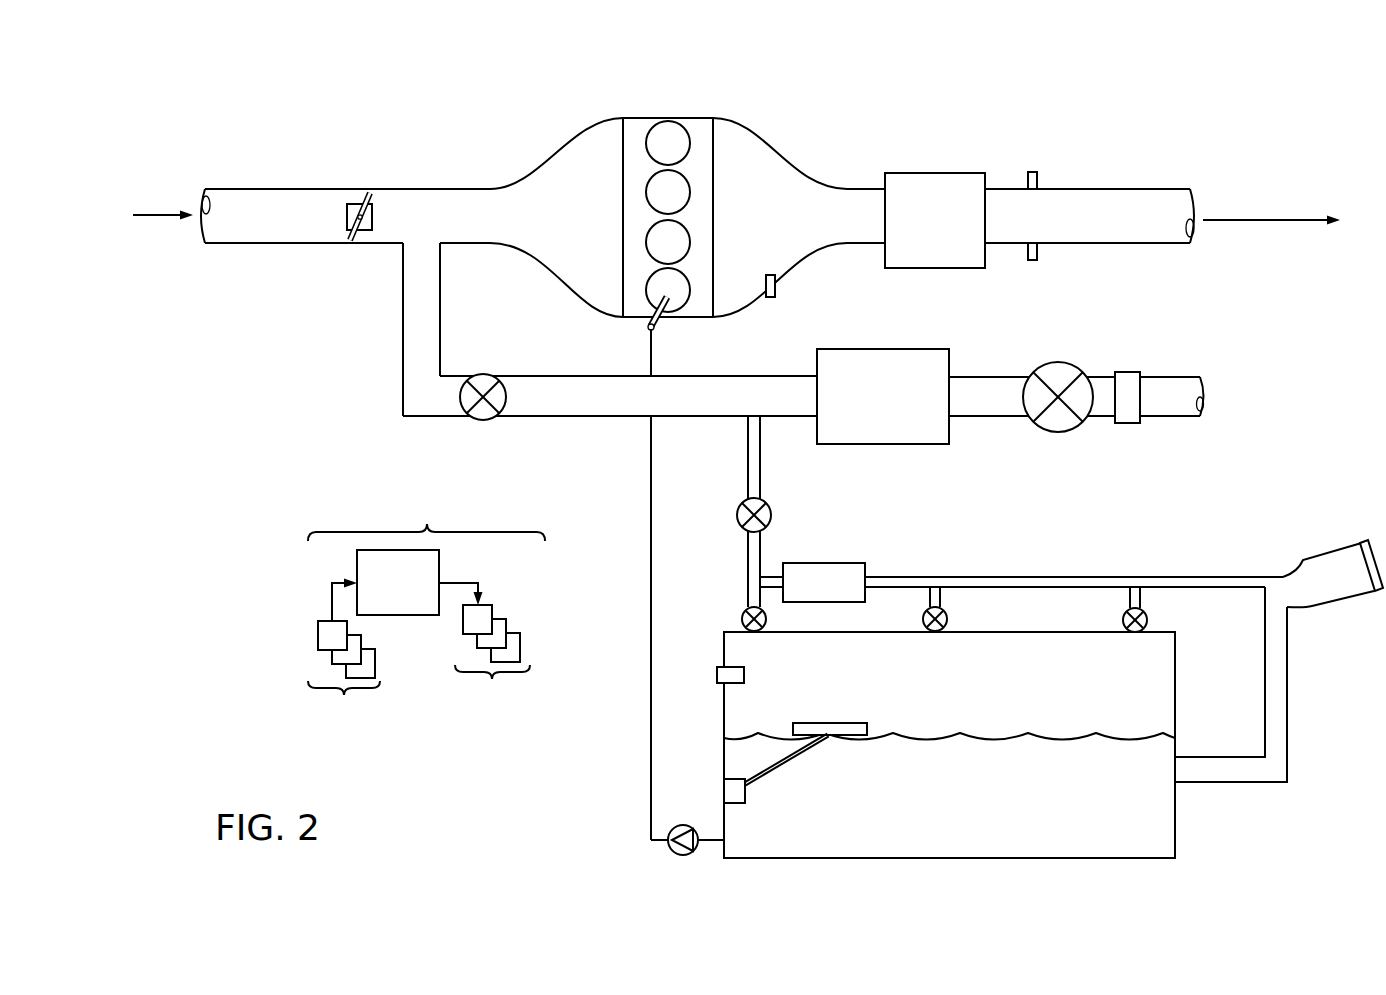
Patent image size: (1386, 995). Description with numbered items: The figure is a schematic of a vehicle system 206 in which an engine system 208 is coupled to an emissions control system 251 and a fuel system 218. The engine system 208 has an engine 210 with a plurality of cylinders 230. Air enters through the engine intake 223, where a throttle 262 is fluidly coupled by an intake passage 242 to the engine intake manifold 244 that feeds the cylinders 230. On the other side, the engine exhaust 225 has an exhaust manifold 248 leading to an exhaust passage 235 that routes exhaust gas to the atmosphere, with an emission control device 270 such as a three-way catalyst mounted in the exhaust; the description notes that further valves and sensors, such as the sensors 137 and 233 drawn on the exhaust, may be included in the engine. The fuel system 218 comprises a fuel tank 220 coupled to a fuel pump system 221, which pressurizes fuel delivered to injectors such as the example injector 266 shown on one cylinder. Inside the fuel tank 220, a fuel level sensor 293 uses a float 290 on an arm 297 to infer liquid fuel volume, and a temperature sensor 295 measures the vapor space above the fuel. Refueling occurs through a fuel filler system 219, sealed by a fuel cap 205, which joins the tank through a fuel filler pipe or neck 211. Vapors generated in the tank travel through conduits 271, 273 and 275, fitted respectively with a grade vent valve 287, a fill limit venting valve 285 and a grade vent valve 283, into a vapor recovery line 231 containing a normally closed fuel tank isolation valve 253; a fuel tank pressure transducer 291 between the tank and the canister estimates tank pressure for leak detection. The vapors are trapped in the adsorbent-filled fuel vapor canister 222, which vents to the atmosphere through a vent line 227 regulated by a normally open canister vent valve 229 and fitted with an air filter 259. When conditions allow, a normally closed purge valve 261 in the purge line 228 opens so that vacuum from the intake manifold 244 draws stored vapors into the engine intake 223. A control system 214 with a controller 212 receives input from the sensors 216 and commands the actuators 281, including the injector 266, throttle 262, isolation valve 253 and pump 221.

The vehicle system 206 is at (214, 117).
The throttle 262 is at (372, 221).
The intake passage 242 is at (391, 244).
The engine intake 223 is at (550, 138).
The engine intake manifold 244 is at (556, 261).
The engine 210 is at (713, 200).
The cylinders 230 is at (689, 134).
The fuel injector 266 is at (657, 320).
The exhaust manifold 248 is at (799, 217).
The engine exhaust 225 is at (878, 124).
The engine system 208 is at (1002, 117).
The emission control device 270 is at (924, 173).
The exhaust passage 235 is at (1143, 189).
The exhaust gas sensor 137 is at (1028, 182).
The exhaust temperature sensor 233 is at (1028, 252).
The vapor recovery line 231 is at (775, 280).
The purge line 228 is at (610, 396).
The purge valve 261 is at (483, 374).
The fuel vapor canister 222 is at (949, 369).
The vent line 227 is at (1076, 396).
The canister vent valve 229 is at (1056, 362).
The air filter 259 is at (1130, 372).
The emissions control system 251 is at (1213, 329).
The control system 214 is at (426, 509).
The controller 212 is at (398, 582).
The sensors 216 is at (344, 658).
The actuators 281 is at (1192, 577).
The fuel system 218 is at (1223, 820).
The fuel tank 220 is at (1175, 728).
The fuel tank isolation valve 253 is at (771, 511).
The fuel tank pressure transducer 291 is at (825, 563).
The grade vent valve 287 is at (735, 616).
The conduit 271 is at (762, 593).
The conduit 273 is at (930, 595).
The fill limit venting valve 285 is at (948, 615).
The conduit 275 is at (1128, 595).
The grade vent valve 283 is at (1148, 618).
The temperature sensor 295 is at (745, 675).
The float 290 is at (835, 723).
The arm 297 is at (770, 772).
The fuel level sensor 293 is at (806, 782).
The fuel pump system 221 is at (683, 825).
The fuel filler pipe 211 is at (1288, 680).
The fuel filler system 219 is at (1333, 532).
The fuel cap 205 is at (1367, 538).